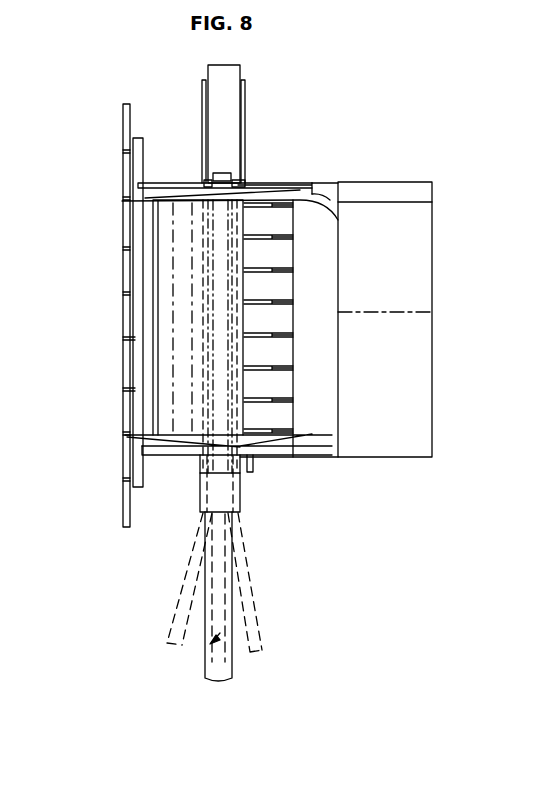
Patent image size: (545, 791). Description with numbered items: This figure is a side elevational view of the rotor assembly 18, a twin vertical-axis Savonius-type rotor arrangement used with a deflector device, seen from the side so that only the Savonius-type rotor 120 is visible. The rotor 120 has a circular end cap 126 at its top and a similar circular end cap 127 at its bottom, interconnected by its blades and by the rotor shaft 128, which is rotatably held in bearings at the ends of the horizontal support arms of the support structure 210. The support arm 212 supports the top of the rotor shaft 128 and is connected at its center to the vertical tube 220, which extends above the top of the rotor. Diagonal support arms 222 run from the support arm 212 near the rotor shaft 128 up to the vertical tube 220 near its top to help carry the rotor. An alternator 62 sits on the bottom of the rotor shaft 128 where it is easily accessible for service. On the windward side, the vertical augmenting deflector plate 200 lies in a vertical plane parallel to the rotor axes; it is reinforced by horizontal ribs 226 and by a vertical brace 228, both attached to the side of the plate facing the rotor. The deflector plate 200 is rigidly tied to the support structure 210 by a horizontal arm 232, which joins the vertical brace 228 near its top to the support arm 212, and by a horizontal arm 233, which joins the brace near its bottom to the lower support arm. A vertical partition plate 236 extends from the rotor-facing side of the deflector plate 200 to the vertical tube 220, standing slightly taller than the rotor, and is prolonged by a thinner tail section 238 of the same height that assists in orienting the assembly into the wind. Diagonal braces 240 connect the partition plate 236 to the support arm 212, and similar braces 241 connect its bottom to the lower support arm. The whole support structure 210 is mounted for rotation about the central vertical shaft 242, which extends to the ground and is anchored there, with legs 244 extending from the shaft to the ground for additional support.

The rotor assembly 18 is at (486, 133).
The alternator 62 is at (236, 501).
The Savonius-type rotor 120 is at (305, 416).
The circular end cap 126 is at (338, 220).
The circular end cap 127 is at (293, 441).
The rotor shaft 128 is at (229, 174).
The deflector plate 200 is at (122, 284).
The support structure 210 is at (251, 99).
The support arm 212 is at (241, 181).
The vertical tube 220 is at (240, 66).
The diagonal support arm 222 is at (246, 128).
The ribs 226 is at (123, 337).
The vertical brace 228 is at (140, 137).
The horizontal arm 232 is at (170, 183).
The horizontal arm 233 is at (173, 447).
The partition plate 236 is at (330, 196).
The tail section 238 is at (433, 250).
The diagonal brace 240 is at (290, 183).
The brace 241 is at (253, 456).
The central vertical shaft 242 is at (233, 566).
The legs 244 is at (190, 571).